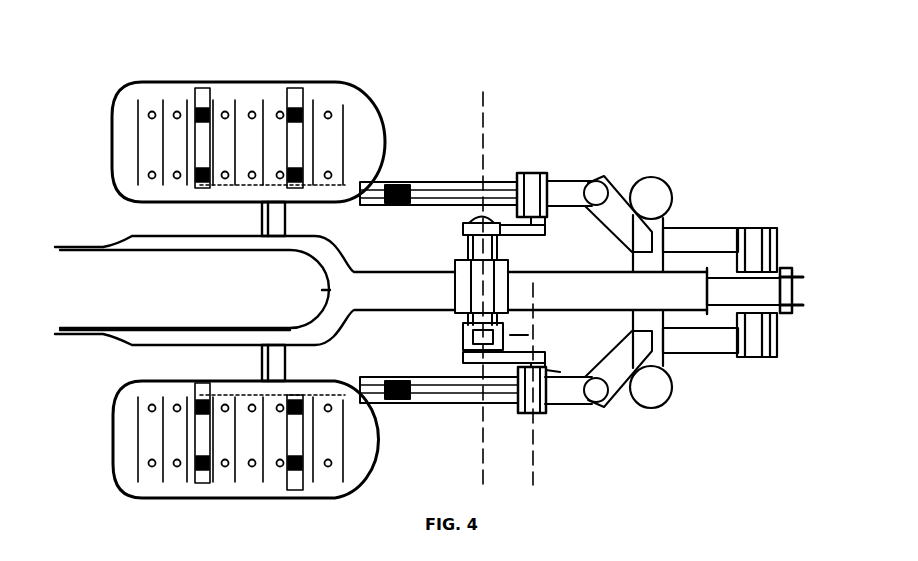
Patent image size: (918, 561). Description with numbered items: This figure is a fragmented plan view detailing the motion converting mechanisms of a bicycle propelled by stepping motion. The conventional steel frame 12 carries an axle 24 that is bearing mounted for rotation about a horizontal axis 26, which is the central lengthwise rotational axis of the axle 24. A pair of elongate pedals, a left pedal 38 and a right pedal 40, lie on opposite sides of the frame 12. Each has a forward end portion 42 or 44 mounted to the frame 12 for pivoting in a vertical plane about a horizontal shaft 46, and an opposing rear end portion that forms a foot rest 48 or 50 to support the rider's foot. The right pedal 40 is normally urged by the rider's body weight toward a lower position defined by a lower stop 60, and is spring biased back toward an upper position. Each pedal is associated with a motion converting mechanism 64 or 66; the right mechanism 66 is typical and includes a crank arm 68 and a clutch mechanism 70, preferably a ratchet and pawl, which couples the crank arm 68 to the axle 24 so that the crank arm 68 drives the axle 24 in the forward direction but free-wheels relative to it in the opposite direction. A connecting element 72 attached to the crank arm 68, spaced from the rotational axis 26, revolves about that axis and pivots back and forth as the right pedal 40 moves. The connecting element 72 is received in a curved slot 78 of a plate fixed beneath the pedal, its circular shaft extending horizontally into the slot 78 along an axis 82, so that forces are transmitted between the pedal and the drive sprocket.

The frame 12 is at (132, 237).
The axle 24 is at (452, 318).
The horizontal axis 26 is at (484, 125).
The left pedal 38 is at (223, 117).
The right pedal 40 is at (208, 443).
The forward end portion 42 is at (690, 228).
The forward end portion 44 is at (703, 357).
The horizontal shaft 46 is at (780, 238).
The foot rest 48 is at (112, 141).
The foot rest 50 is at (110, 461).
The lower stop 60 is at (220, 352).
The motion converting mechanism 64 is at (457, 160).
The motion converting mechanism 66 is at (458, 418).
The crank arm 68 is at (519, 346).
The clutch mechanism 70 is at (458, 334).
The connecting element 72 is at (553, 370).
The curved slot 78 is at (440, 366).
The axis 82 is at (534, 460).